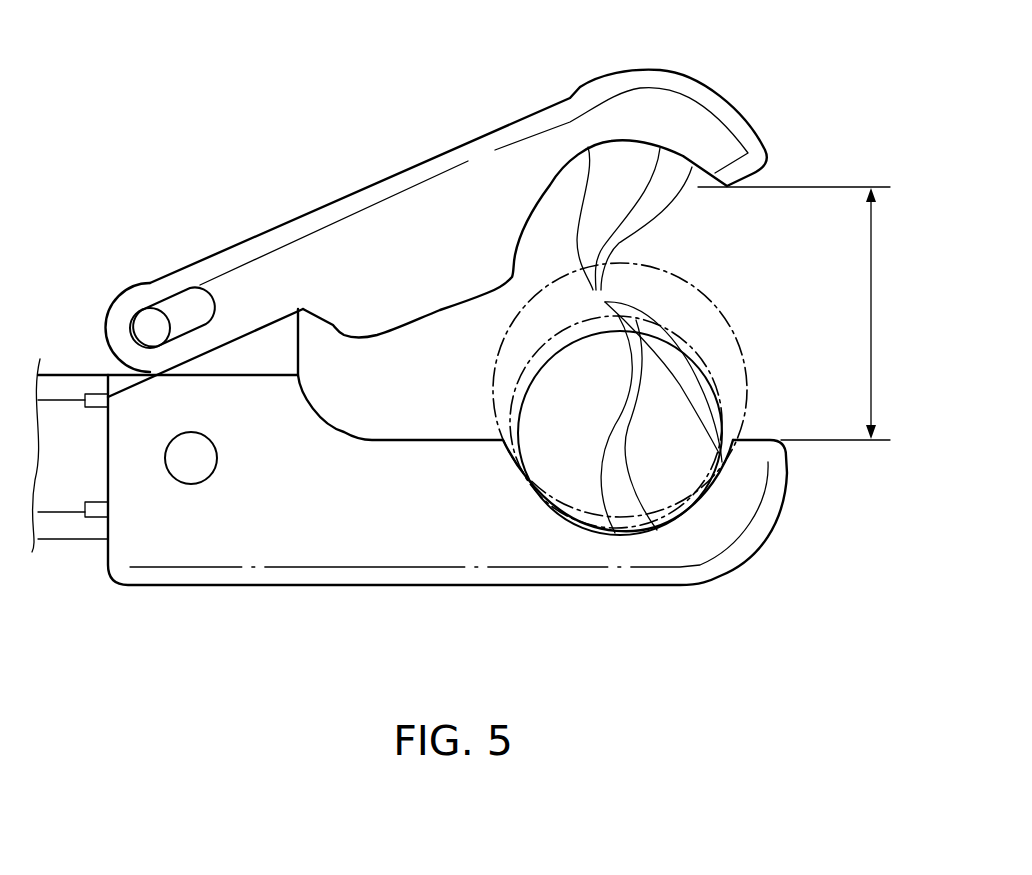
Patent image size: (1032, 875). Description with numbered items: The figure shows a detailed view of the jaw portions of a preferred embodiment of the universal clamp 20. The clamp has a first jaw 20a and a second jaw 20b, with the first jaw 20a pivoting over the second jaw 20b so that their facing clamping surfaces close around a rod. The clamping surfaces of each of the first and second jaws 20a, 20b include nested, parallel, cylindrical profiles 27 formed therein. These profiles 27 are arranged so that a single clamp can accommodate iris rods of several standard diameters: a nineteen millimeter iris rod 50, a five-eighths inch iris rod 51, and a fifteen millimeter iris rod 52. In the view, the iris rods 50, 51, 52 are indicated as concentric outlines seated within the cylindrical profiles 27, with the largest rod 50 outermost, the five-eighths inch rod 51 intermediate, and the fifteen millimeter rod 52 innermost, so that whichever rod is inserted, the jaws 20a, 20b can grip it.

The universal clamp 20 is at (452, 353).
The first jaw 20a is at (363, 177).
The second jaw 20b is at (273, 590).
The nested, parallel, cylindrical profiles 27 is at (612, 306).
The 19 mm iris rod 50 is at (703, 294).
The ⅝" (15.875 mm) iris rod 51 is at (680, 338).
The 15 mm iris rod 52 is at (730, 368).